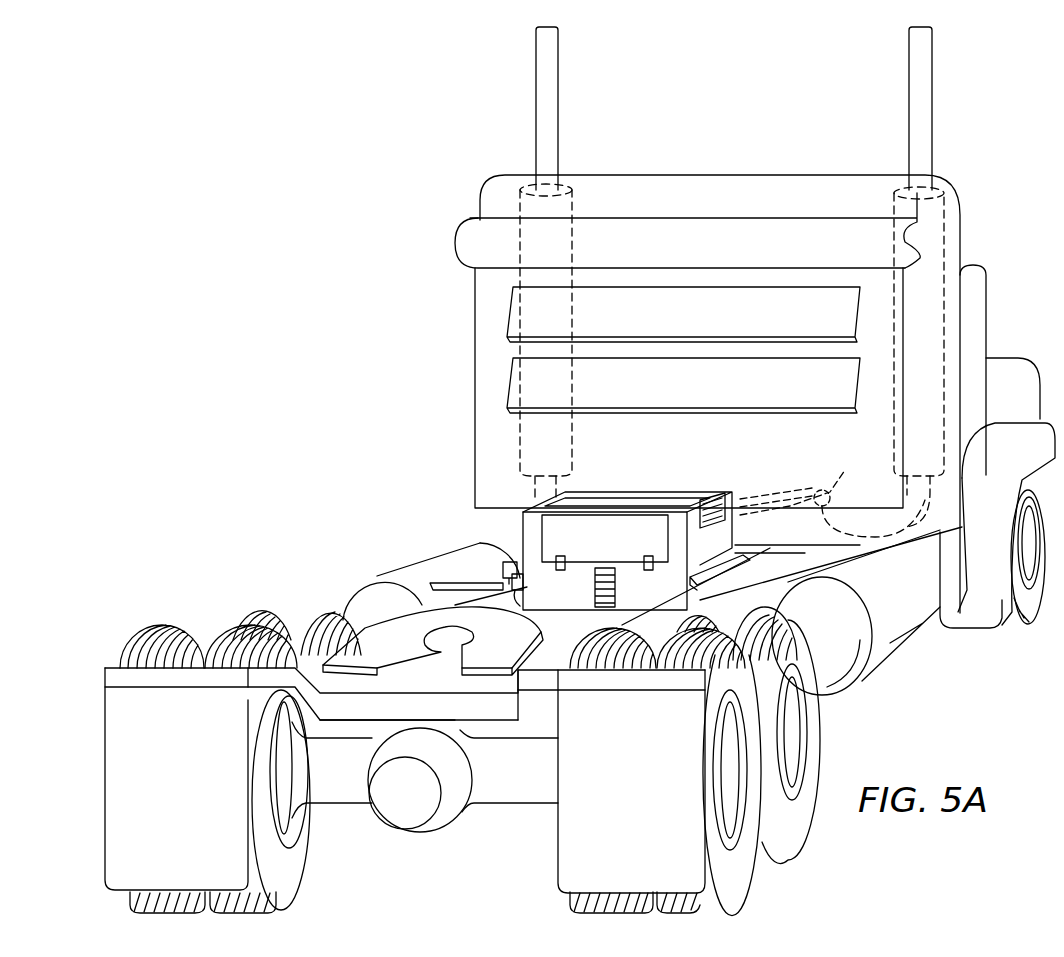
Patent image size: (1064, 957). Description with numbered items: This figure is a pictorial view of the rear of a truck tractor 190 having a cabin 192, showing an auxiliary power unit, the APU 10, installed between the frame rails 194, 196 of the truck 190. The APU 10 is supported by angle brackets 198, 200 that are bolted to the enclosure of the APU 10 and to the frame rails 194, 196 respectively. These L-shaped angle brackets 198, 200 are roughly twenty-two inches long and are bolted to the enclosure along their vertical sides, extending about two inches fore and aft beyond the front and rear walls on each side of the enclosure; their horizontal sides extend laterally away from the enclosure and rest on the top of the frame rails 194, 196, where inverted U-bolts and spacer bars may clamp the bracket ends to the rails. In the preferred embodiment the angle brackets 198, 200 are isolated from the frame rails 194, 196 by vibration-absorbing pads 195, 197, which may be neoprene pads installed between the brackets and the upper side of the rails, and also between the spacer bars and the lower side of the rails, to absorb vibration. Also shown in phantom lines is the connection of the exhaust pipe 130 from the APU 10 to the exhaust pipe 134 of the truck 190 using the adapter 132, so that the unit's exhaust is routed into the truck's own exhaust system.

The APU 10 is at (634, 486).
The exhaust pipe 130 is at (757, 493).
The adapter 132 is at (820, 490).
The exhaust pipe 134 is at (884, 548).
The truck tractor 190 is at (423, 333).
The cabin 192 is at (713, 176).
The frame rail 194 is at (420, 568).
The vibration-absorbing pad 195 is at (527, 598).
The frame rail 196 is at (652, 608).
The vibration-absorbing pad 197 is at (782, 598).
The angle bracket 198 is at (493, 560).
The angle bracket 200 is at (722, 543).